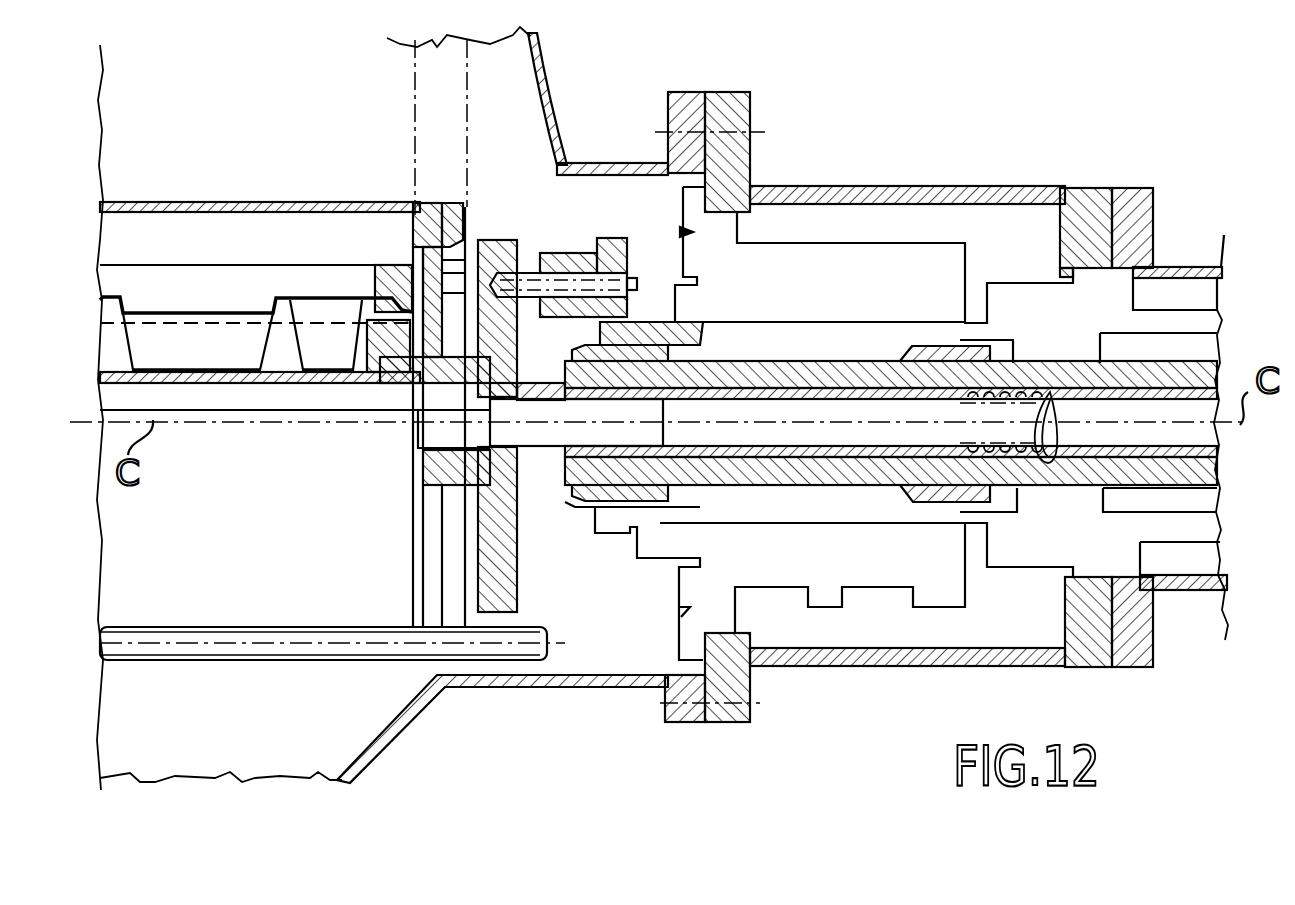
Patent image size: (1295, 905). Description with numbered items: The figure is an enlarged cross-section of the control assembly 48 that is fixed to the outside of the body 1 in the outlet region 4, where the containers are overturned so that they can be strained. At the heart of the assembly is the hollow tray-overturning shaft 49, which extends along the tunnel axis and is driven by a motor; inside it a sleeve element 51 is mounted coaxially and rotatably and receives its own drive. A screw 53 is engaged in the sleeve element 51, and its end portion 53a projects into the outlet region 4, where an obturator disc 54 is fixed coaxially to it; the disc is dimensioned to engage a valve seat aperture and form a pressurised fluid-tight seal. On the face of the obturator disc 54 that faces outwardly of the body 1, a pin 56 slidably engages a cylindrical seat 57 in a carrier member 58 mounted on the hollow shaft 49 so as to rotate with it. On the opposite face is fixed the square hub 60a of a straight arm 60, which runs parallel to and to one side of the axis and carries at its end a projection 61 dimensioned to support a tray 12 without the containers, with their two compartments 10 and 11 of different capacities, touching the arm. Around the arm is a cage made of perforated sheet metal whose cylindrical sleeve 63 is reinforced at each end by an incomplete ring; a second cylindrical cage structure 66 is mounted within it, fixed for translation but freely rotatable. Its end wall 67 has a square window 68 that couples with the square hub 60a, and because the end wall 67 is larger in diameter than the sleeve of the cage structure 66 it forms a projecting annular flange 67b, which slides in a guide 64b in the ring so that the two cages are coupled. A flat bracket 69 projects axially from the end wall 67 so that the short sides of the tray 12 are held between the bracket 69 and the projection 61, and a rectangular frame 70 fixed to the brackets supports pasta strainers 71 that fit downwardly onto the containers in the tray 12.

The body 1 is at (557, 120).
The outlet region 4 is at (513, 68).
The compartment 10 is at (208, 360).
The compartment 11 is at (346, 360).
The tray 12 is at (242, 312).
The control assembly 48 is at (950, 133).
The tray-overturning shaft 49 is at (843, 338).
The sleeve element 51 is at (870, 370).
The screw 53 is at (750, 378).
The end portion of the screw 53a is at (523, 380).
The obturator disc 54 is at (505, 250).
The pin 56 is at (523, 280).
The cylindrical seat 57 is at (567, 283).
The carrier member 58 is at (632, 255).
The straight arm 60 is at (262, 383).
The square hub 60a is at (410, 482).
The projection 61 is at (378, 365).
The cylindrical sleeve 63 is at (300, 203).
The guide 64b is at (425, 205).
The second cylindrical cage structure 66 is at (147, 265).
The end wall 67 is at (413, 385).
The projecting annular flange 67b is at (465, 207).
The square window 68 is at (420, 578).
The flat bracket 69 is at (405, 270).
The rectangular frame 70 is at (376, 284).
The pasta strainer 71 is at (170, 310).